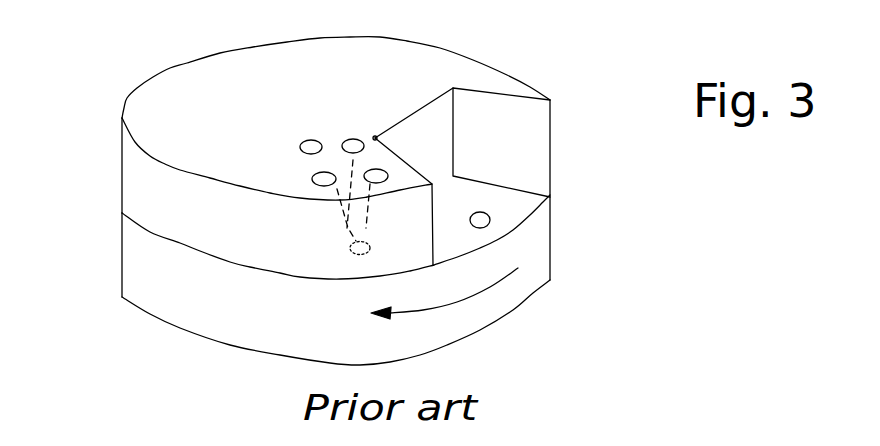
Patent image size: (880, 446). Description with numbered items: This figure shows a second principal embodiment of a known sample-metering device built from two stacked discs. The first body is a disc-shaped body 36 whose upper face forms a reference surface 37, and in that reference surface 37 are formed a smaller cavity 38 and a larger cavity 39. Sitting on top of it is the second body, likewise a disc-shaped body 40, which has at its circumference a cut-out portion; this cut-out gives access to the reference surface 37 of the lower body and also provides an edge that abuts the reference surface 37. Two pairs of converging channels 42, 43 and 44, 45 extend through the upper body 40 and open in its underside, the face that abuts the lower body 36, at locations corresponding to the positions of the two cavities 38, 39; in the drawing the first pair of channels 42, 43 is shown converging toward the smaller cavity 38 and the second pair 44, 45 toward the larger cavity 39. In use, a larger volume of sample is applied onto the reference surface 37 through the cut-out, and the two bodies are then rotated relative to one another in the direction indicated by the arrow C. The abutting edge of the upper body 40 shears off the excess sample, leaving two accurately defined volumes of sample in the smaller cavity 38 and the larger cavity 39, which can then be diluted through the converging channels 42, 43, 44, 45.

The disc-shaped body 36 is at (215, 317).
The reference surface 37 is at (523, 203).
The smaller cavity 38 is at (442, 200).
The larger cavity 39 is at (489, 219).
The disc-shaped body 40 is at (133, 170).
The converging channel 42 is at (319, 160).
The converging channel 43 is at (375, 138).
The converging channel 44 is at (345, 233).
The converging channel 45 is at (366, 228).
The arrow C is at (433, 308).